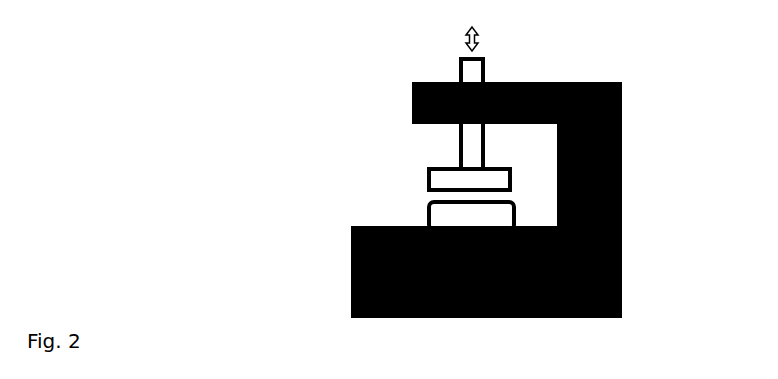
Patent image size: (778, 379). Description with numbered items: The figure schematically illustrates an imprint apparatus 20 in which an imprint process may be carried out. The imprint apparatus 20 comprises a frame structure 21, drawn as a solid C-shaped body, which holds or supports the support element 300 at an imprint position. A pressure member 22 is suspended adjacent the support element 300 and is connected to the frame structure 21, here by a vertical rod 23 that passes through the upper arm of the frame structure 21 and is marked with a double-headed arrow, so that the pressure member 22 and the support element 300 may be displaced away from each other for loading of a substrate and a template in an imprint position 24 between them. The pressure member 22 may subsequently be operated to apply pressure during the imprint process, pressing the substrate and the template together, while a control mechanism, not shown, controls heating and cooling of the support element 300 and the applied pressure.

The imprint apparatus 20 is at (297, 105).
The frame structure 21 is at (585, 318).
The pressure member 22 is at (507, 181).
The piston rod 23 is at (477, 73).
The imprint position 24 is at (435, 197).
The support element 300 is at (433, 220).